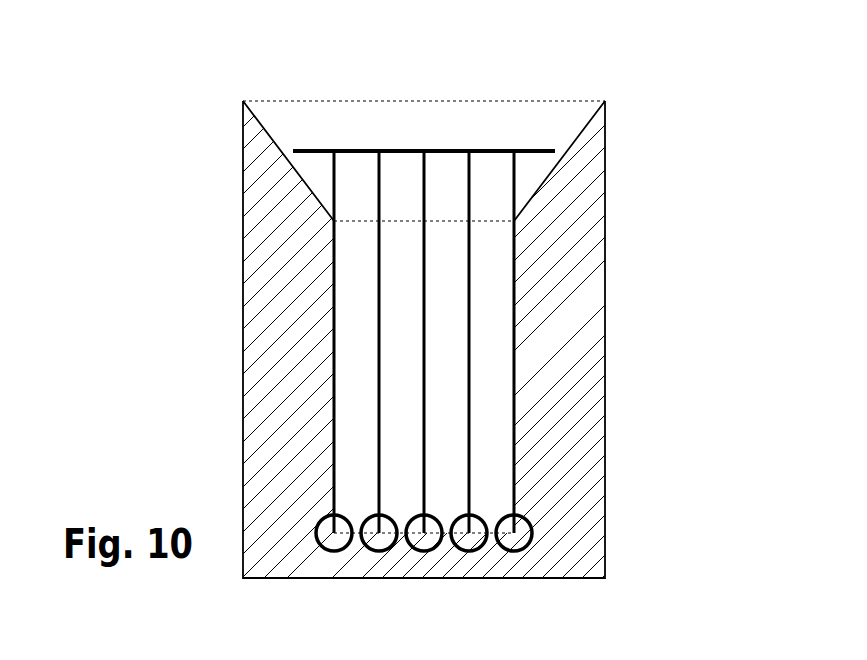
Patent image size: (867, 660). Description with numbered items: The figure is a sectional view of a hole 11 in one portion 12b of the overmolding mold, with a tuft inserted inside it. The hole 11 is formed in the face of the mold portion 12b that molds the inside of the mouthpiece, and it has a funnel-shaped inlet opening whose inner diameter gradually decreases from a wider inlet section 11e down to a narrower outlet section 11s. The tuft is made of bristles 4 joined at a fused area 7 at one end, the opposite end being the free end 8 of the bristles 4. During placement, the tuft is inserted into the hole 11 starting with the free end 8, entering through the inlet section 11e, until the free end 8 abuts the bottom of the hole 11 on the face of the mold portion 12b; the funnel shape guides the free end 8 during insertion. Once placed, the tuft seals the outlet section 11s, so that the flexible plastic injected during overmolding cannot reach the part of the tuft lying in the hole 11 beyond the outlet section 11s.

The fused area 7 is at (403, 151).
The inlet section 11e is at (505, 100).
The outlet section 11s is at (493, 222).
The hole 11 is at (445, 295).
The mold portion 12b is at (553, 370).
The bristles 4 is at (424, 438).
The free end of the bristles 8 is at (505, 552).